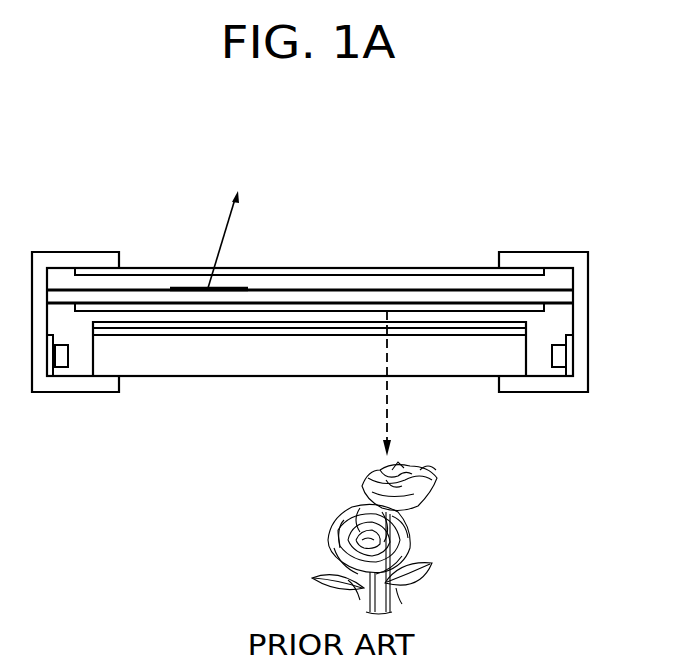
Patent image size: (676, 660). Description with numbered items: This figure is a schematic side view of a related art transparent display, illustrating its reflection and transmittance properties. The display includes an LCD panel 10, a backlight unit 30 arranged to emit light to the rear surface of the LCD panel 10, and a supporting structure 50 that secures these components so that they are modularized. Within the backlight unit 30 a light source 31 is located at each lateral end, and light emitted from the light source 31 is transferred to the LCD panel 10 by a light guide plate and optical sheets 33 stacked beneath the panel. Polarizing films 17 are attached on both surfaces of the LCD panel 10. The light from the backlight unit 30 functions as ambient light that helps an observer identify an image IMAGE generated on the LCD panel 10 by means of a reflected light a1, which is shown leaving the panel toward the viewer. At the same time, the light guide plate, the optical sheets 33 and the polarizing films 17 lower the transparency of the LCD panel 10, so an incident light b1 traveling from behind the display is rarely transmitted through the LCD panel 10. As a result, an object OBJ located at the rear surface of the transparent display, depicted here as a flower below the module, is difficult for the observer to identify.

The LCD panel 10 is at (320, 283).
The polarizing films 17 is at (459, 310).
The backlight unit 30 is at (310, 407).
The light source 31 is at (62, 365).
The optical sheets 33 is at (108, 365).
The supporting structure 50 is at (77, 258).
The reflected light a1 is at (208, 288).
The incident light b1 is at (387, 311).
The image IMAGE is at (188, 288).
The object OBJ is at (333, 537).